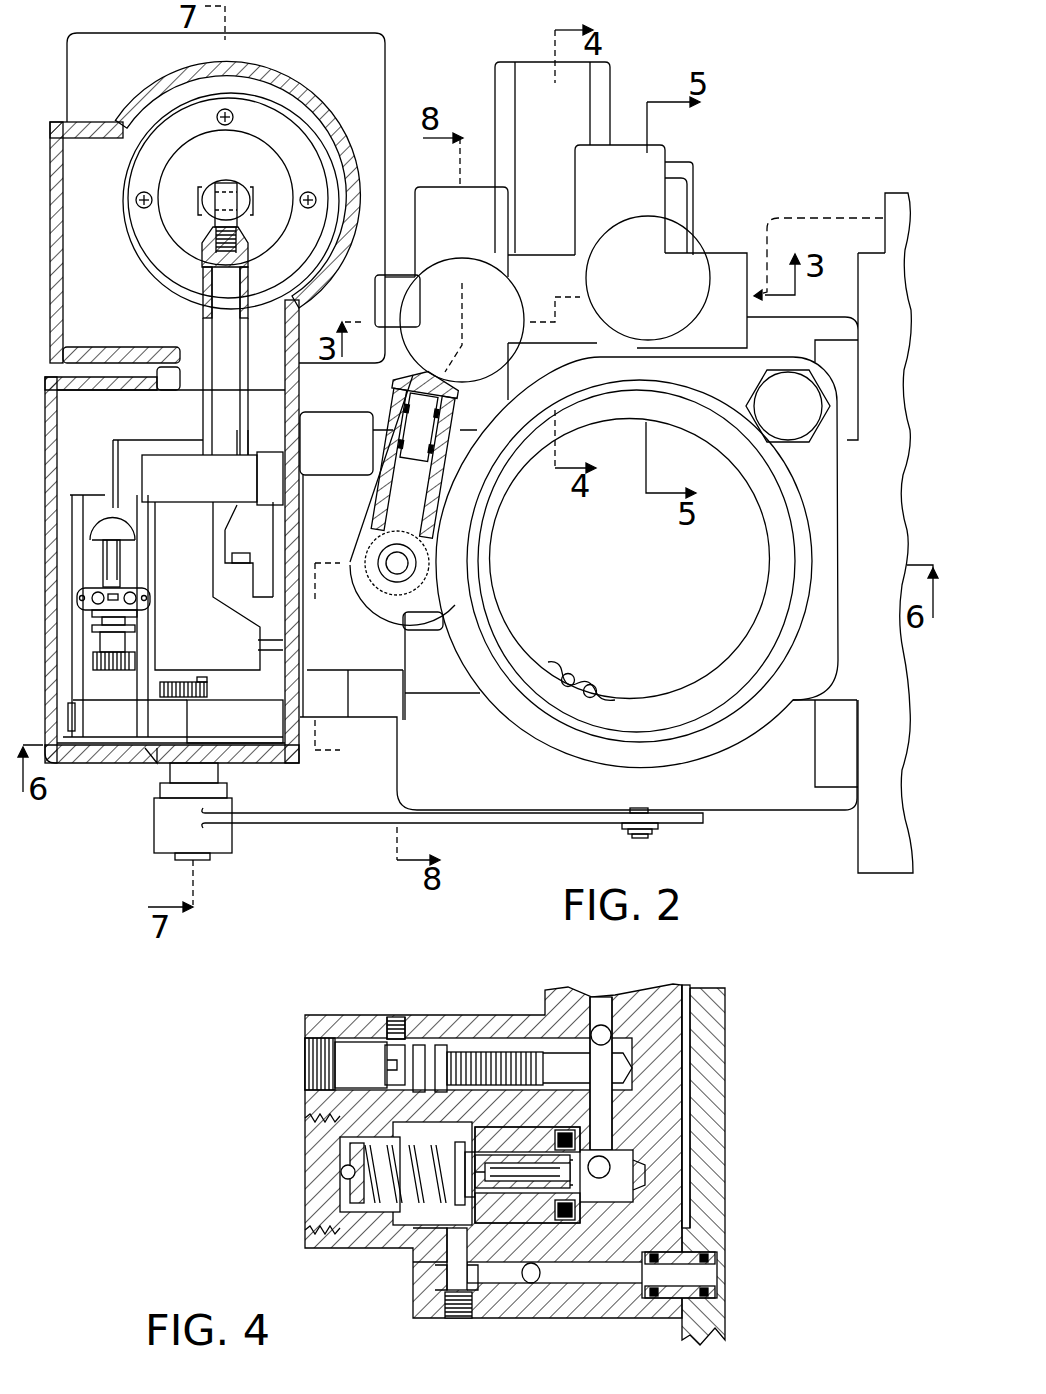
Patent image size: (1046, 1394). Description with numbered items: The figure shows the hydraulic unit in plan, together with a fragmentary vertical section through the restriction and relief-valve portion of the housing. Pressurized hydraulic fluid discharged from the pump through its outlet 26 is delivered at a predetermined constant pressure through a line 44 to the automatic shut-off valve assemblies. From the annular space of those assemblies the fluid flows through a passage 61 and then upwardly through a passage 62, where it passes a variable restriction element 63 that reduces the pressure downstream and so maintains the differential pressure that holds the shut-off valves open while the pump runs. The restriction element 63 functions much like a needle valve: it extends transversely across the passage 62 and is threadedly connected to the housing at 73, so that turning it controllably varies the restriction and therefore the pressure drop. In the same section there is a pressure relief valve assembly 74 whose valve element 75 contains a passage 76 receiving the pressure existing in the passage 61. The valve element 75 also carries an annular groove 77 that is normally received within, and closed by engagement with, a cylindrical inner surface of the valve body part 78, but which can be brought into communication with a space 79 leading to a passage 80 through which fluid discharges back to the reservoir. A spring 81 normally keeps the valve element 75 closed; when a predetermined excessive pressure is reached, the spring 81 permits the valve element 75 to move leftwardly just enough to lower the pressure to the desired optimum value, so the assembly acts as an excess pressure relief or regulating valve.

In FIG. 2, the outlet 26 is at (883, 180).
In FIG. 2, the line 44 is at (790, 216).
In FIG. 4, the passage 61 is at (610, 1167).
In FIG. 4, the passage 62 is at (607, 1133).
In FIG. 4, the variable restriction element 63 is at (597, 1062).
In FIG. 4, the threaded connection 73 is at (473, 1055).
In FIG. 4, the pressure relief valve assembly 74 is at (405, 1225).
In FIG. 4, the valve element 75 is at (540, 1193).
In FIG. 4, the passage 76 is at (590, 1182).
In FIG. 4, the annular groove 77 is at (512, 1160).
In FIG. 4, the valve body part 78 is at (527, 1173).
In FIG. 4, the space 79 is at (465, 1215).
In FIG. 4, the passage 80 is at (553, 1280).
In FIG. 4, the spring 81 is at (432, 1200).